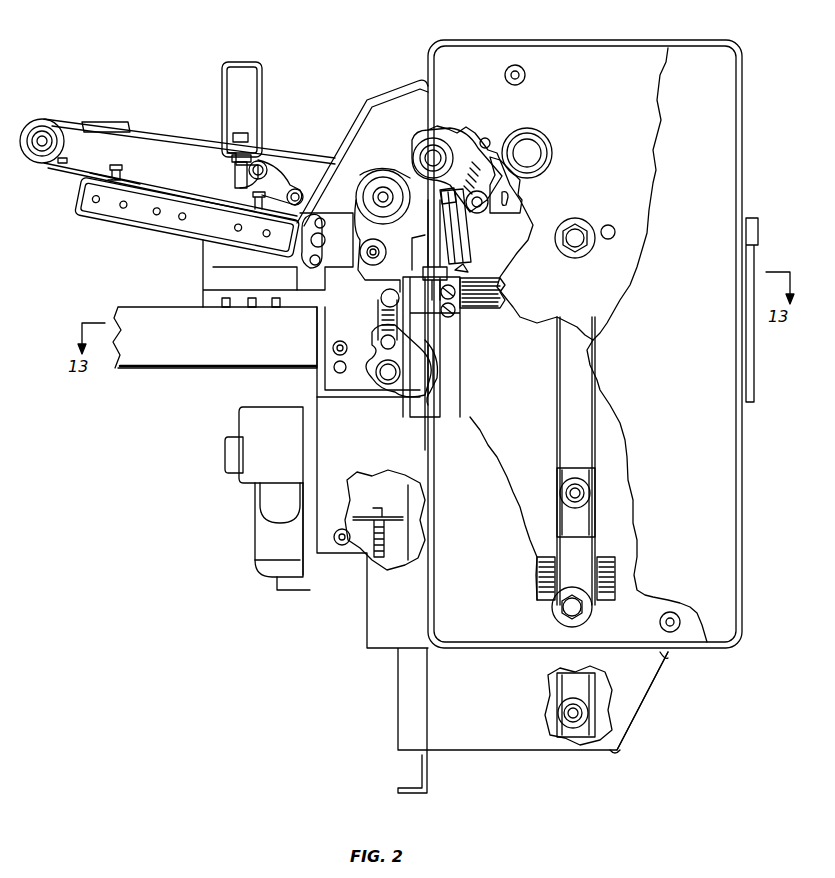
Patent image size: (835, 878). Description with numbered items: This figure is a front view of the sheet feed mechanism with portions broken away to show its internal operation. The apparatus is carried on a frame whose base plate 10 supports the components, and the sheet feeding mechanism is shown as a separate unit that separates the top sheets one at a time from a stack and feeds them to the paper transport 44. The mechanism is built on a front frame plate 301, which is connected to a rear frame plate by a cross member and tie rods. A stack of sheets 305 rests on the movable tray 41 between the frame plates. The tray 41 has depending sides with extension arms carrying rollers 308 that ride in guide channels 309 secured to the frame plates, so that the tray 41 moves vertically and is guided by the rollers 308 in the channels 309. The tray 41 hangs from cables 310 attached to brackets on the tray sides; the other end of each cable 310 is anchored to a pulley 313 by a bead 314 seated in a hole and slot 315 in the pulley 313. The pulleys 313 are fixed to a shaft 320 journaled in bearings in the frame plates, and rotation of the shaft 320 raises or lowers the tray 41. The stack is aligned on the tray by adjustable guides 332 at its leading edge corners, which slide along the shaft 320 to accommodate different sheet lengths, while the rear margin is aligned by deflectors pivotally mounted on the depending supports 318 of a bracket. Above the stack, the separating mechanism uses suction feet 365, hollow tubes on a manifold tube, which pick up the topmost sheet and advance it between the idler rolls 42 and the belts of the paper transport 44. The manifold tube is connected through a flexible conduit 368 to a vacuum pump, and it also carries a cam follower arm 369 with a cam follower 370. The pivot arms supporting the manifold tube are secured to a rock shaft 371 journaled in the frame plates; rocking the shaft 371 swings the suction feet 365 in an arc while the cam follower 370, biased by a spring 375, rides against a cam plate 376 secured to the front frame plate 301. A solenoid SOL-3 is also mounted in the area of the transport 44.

The base plate 10 is at (160, 380).
The movable tray 41 is at (600, 595).
The idler rolls 42 is at (394, 252).
The paper transport 44 is at (147, 118).
The solenoid SOL-3 is at (262, 97).
The front frame plate 301 is at (596, 46).
The stack of sheets 305 is at (496, 286).
The rollers 308 is at (555, 495).
The guide channels 309 is at (557, 450).
The cables 310 is at (420, 408).
The pulley 313 is at (432, 385).
The bead 314 is at (380, 337).
The hole and slot 315 is at (400, 337).
The depending supports 318 is at (749, 403).
The shaft 320 is at (388, 385).
The adjustable guides 332 is at (452, 413).
The suction feet 365 is at (392, 256).
The flexible conduit 368 is at (457, 248).
The cam follower arm 369 is at (475, 150).
The cam follower 370 is at (480, 214).
The rock shaft 371 is at (535, 146).
The spring 375 is at (488, 152).
The cam plate 376 is at (514, 206).